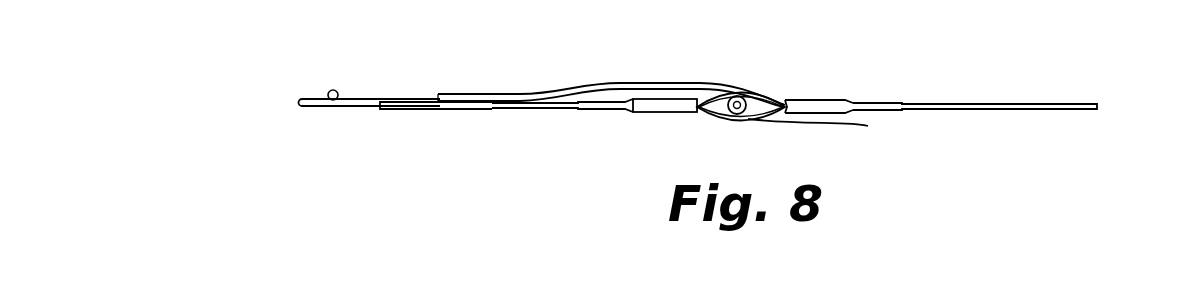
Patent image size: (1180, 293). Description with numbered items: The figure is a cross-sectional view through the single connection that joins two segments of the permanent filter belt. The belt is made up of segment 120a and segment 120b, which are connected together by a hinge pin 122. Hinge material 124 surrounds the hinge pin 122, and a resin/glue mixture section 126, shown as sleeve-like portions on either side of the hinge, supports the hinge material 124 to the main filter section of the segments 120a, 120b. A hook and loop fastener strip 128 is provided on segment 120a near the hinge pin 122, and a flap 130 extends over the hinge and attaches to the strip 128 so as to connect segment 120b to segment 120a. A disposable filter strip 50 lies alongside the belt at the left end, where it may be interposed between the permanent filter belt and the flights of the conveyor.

The disposable filter strip 50 is at (334, 100).
The segment 120a is at (407, 109).
The segment 120b is at (1067, 110).
The hinge pin 122 is at (868, 126).
The hinge material 124 is at (733, 119).
The resin/glue mixture section 126 is at (670, 113).
The hook and loop fastener strip 128 is at (492, 108).
The flap 130 is at (664, 87).